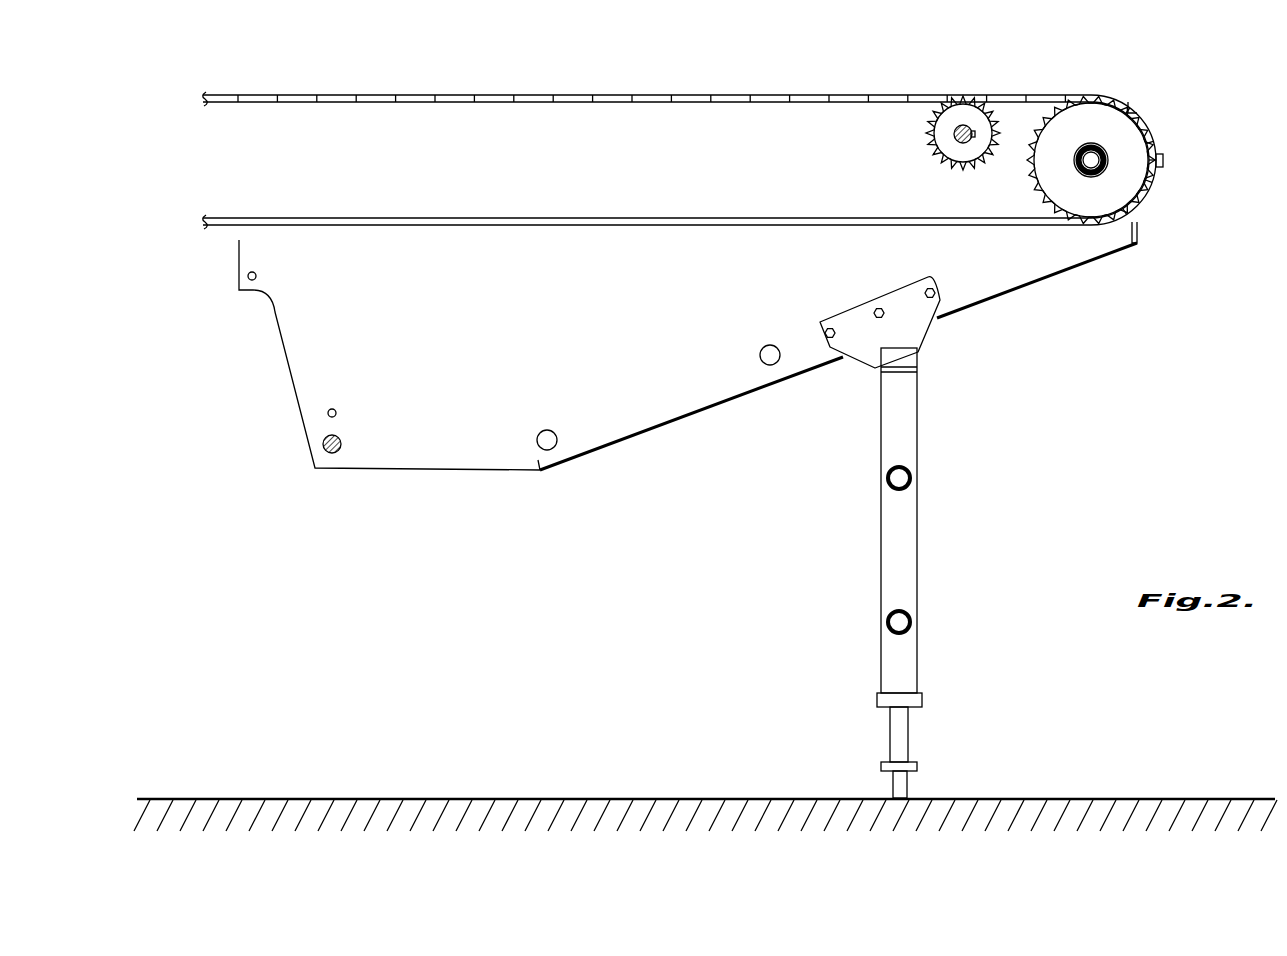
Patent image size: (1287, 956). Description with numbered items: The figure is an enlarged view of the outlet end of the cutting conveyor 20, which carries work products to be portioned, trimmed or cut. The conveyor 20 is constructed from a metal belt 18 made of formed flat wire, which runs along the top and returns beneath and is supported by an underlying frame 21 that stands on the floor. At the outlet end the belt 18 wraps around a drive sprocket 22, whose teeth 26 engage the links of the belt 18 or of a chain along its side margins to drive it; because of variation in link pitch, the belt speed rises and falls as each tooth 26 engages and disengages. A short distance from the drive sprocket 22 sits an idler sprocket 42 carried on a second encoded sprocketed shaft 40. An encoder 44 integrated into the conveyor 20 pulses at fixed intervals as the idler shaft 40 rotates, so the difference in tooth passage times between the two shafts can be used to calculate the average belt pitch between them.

The conveyor 20 is at (282, 49).
The metal belt 18 is at (992, 97).
The sprockets 22 is at (1135, 145).
The idler sprocket 42 is at (961, 113).
The encoded sprocketed shaft 40 is at (954, 138).
The encoder 44 is at (973, 170).
The teeth 26 is at (1137, 205).
The frame 21 is at (933, 418).